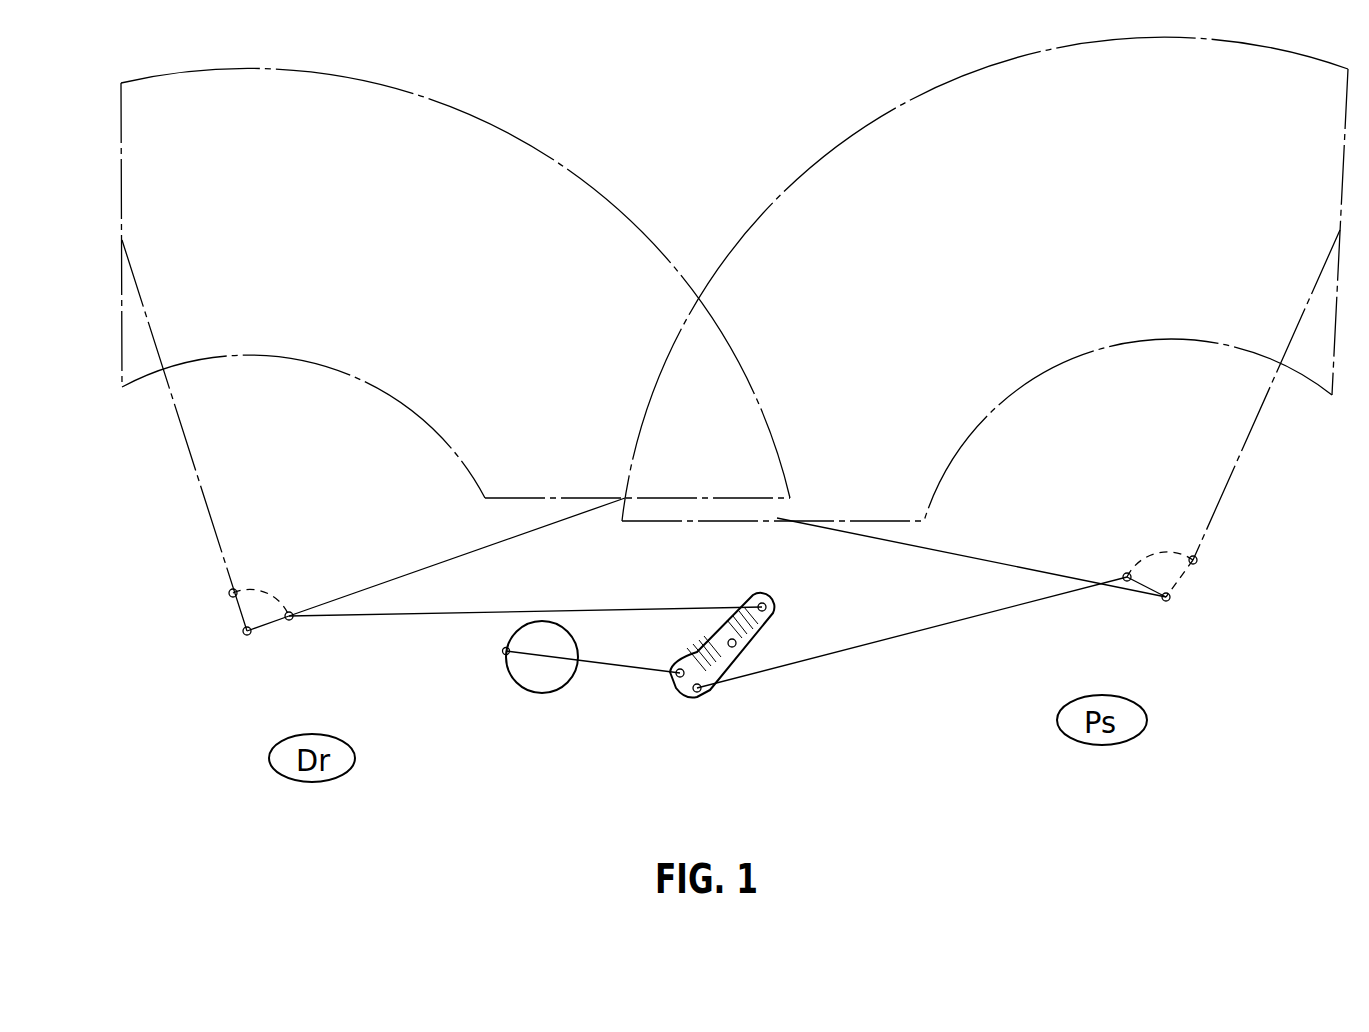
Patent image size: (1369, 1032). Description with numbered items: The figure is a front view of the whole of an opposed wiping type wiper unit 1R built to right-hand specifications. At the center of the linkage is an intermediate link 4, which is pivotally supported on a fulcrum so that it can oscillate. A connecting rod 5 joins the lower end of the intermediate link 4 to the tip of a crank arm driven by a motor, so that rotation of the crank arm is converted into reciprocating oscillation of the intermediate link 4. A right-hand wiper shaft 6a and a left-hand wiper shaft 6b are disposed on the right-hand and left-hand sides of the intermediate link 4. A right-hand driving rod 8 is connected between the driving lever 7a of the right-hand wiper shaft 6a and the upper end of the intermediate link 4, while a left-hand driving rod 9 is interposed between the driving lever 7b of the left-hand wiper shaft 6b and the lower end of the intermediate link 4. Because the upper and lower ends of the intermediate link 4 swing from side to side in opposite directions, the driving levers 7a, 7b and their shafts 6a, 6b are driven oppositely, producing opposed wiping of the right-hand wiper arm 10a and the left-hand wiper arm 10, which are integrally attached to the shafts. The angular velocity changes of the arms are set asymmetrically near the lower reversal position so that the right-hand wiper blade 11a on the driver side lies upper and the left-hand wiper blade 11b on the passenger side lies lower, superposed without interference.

The opposed wiping type wiper unit 1R is at (800, 702).
The intermediate link 4 is at (677, 694).
The connecting rod 5 is at (615, 664).
The right-hand wiper shaft 6a is at (247, 635).
The left-hand wiper shaft 6b is at (1170, 603).
The driving lever 7a is at (285, 622).
The driving lever 7b is at (1137, 585).
The right-hand driving rod 8 is at (395, 613).
The left-hand driving rod 9 is at (998, 612).
The passenger side link rod 10 is at (1020, 567).
The right-hand wiper arm 10a is at (350, 593).
The right-hand wiper blade 11a is at (547, 498).
The left-hand wiper blade 11b is at (888, 519).